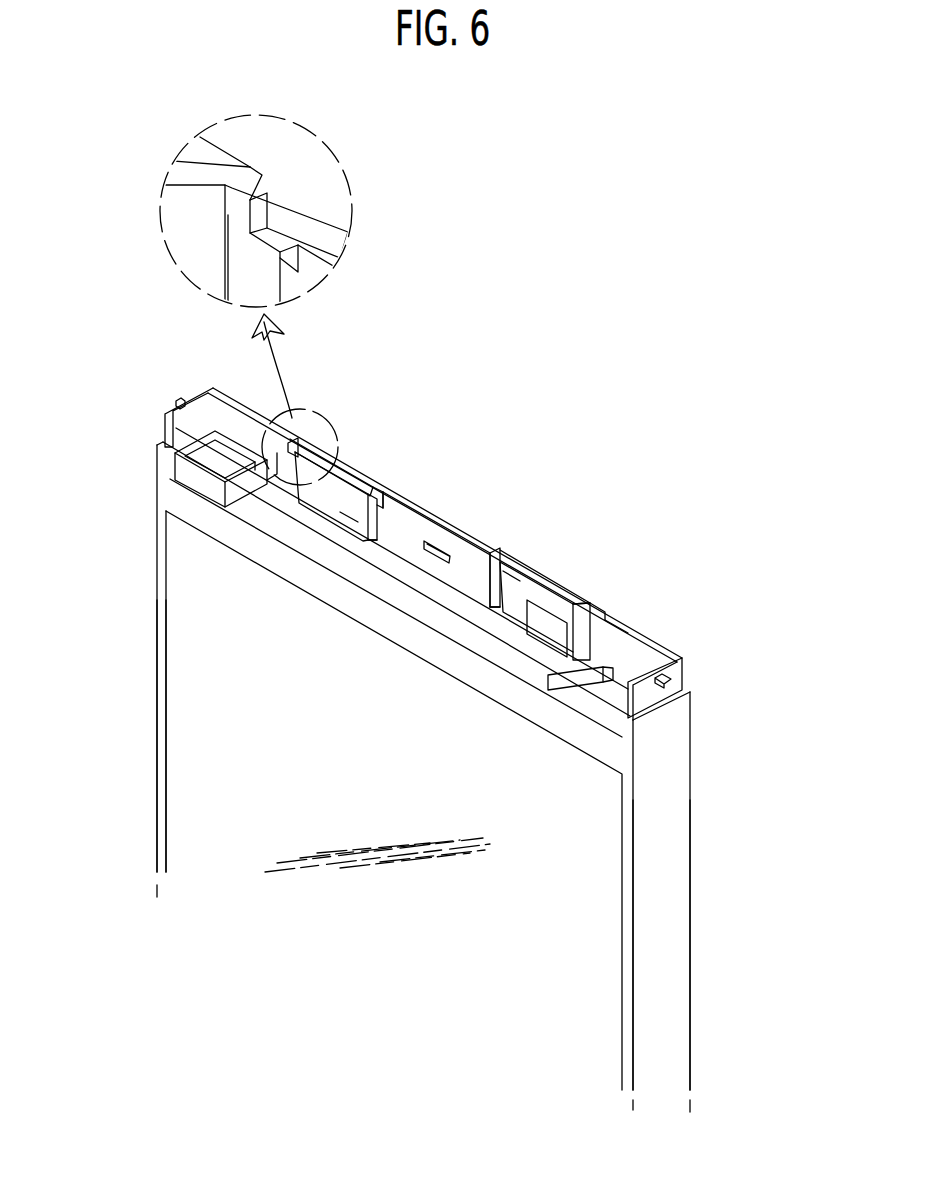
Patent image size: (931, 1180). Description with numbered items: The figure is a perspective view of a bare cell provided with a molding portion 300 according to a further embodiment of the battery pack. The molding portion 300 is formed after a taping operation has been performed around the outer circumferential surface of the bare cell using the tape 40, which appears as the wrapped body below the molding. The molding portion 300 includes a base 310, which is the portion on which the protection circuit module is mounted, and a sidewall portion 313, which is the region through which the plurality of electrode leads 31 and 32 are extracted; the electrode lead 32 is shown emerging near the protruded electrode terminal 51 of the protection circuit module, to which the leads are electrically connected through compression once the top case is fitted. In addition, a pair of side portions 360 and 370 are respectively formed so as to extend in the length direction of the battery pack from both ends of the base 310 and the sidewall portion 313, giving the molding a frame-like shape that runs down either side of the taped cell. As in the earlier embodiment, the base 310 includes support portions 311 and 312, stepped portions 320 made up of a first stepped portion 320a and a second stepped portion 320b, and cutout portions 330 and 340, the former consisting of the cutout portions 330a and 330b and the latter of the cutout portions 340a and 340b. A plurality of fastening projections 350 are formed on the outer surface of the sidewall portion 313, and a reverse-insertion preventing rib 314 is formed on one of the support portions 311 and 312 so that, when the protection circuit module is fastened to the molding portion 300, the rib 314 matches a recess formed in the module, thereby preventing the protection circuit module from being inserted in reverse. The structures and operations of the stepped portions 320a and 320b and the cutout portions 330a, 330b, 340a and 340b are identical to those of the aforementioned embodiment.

The molding portion 300 is at (421, 573).
The base 310 is at (422, 552).
The support portion 311 is at (190, 470).
The support portion 312 is at (600, 746).
The sidewall portion 313 is at (410, 533).
The reverse-insertion preventing rib 314 is at (575, 670).
The stepped portions 320 is at (408, 654).
The stepped portion 320a is at (372, 540).
The stepped portion 320b is at (507, 578).
The cutout portions 330 is at (370, 437).
The cutout portion 330a is at (300, 422).
The cutout portion 330b is at (399, 493).
The cutout portions 340 is at (572, 555).
The cutout portion 340a is at (492, 548).
The cutout portion 340b is at (604, 607).
The fastening projection 350 is at (175, 401).
The side portion 360 is at (153, 688).
The side portion 370 is at (680, 877).
The tape 40 is at (178, 596).
The electrode lead 31 is at (358, 515).
The electrode lead 32 is at (540, 620).
The protruded electrode terminal 51 is at (520, 572).